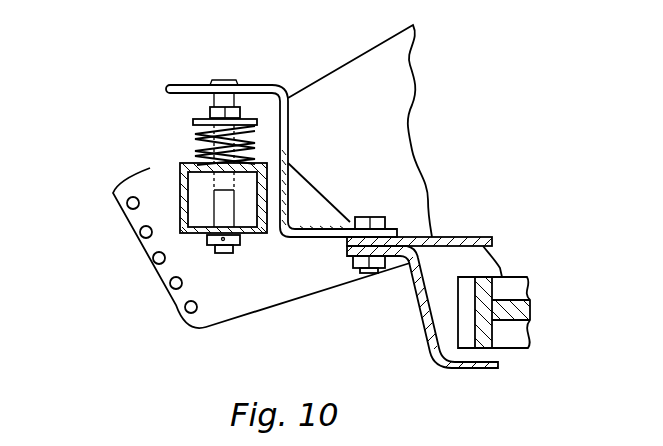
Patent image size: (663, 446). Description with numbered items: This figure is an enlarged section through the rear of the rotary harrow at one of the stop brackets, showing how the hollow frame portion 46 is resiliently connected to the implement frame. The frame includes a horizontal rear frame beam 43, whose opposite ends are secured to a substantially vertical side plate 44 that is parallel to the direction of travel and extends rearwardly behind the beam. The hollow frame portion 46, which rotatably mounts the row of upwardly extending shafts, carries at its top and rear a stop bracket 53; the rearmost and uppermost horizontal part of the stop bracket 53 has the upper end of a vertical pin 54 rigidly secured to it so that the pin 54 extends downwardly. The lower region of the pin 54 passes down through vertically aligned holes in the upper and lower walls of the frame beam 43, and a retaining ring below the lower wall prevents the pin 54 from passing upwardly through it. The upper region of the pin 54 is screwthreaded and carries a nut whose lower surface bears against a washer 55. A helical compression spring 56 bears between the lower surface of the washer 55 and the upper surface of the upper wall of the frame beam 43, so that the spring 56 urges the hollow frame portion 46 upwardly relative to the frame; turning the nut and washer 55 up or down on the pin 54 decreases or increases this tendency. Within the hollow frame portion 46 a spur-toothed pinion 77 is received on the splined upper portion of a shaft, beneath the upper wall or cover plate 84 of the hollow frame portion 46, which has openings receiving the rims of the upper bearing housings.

The frame beam 43 is at (185, 188).
The side plate 44 is at (348, 63).
The hollow frame portion 46 is at (418, 327).
The stop bracket 53 is at (192, 65).
The vertical pin 54 is at (222, 254).
The washer 55 is at (200, 110).
The helical compression spring 56 is at (195, 137).
The pinion 77 is at (513, 282).
The upper wall or cover plate 84 is at (470, 236).